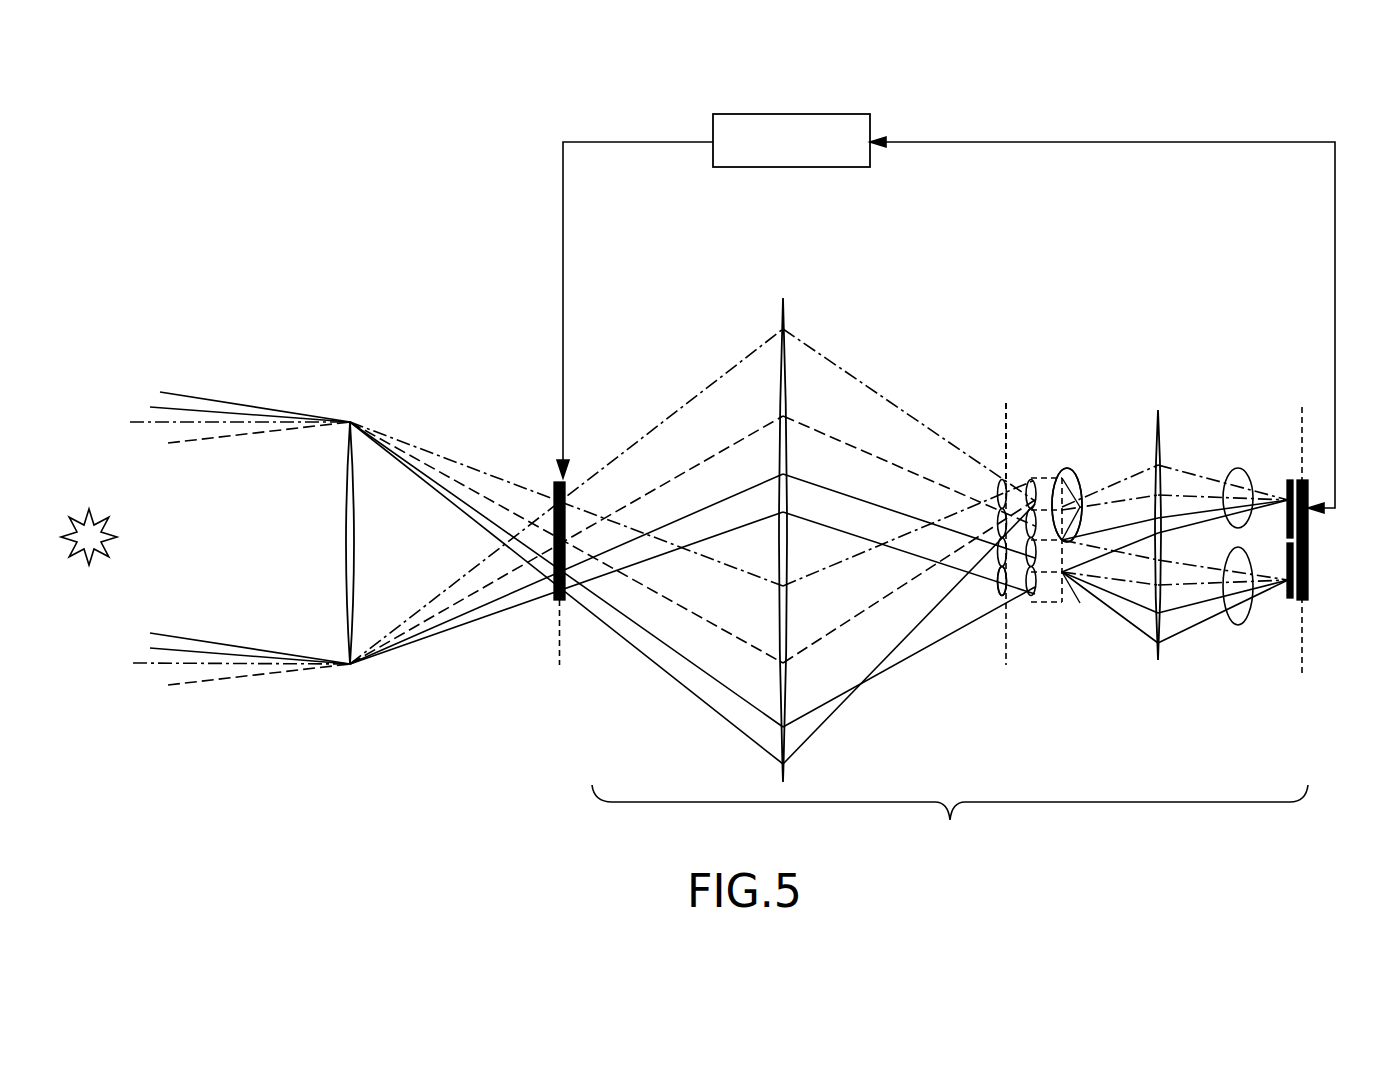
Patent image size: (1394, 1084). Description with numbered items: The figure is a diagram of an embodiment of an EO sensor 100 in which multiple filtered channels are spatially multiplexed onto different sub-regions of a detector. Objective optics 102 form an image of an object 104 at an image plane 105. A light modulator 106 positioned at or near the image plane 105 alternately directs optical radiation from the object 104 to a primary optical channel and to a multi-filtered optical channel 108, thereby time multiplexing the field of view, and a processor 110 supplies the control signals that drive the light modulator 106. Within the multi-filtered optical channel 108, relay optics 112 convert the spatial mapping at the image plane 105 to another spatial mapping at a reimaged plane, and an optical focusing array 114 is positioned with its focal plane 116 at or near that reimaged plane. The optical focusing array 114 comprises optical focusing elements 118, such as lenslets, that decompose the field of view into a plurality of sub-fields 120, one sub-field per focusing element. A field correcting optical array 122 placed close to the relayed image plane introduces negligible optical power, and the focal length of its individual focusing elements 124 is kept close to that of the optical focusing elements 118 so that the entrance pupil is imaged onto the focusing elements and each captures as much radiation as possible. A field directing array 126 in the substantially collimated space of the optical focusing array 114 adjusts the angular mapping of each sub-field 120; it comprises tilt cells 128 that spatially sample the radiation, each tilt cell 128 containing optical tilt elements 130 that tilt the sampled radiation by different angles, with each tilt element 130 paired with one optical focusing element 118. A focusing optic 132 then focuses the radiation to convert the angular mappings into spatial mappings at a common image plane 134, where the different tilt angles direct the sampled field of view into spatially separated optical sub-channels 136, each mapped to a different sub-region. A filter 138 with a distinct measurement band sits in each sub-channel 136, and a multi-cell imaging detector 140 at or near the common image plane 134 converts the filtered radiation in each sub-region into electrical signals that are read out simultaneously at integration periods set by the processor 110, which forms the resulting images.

The EO sensor 100 is at (241, 243).
The objective optics 102 is at (456, 546).
The object 104 is at (90, 510).
The image plane 105 is at (528, 648).
The light modulator 106 is at (532, 508).
The multi-filtered optical channel 108 is at (950, 819).
The processor 110 is at (946, 313).
The relay optics 112 is at (907, 518).
The optical focusing array 114 is at (1015, 507).
The focal plane 116 is at (977, 407).
The optical focusing elements 118 is at (1046, 568).
The sub-fields 120 is at (598, 449).
The field correcting optical array 122 is at (969, 499).
The individual focusing elements 124 is at (983, 619).
The field directing array 126 is at (1055, 473).
The tilt cells 128 is at (1071, 473).
The optical tilt elements 130 is at (1105, 531).
The focusing optic 132 is at (1221, 513).
The common image plane 134 is at (1284, 513).
The optical sub-channels 136 is at (1234, 543).
The filter 138 is at (1278, 574).
The multi-cell imaging detector 140 is at (1334, 540).